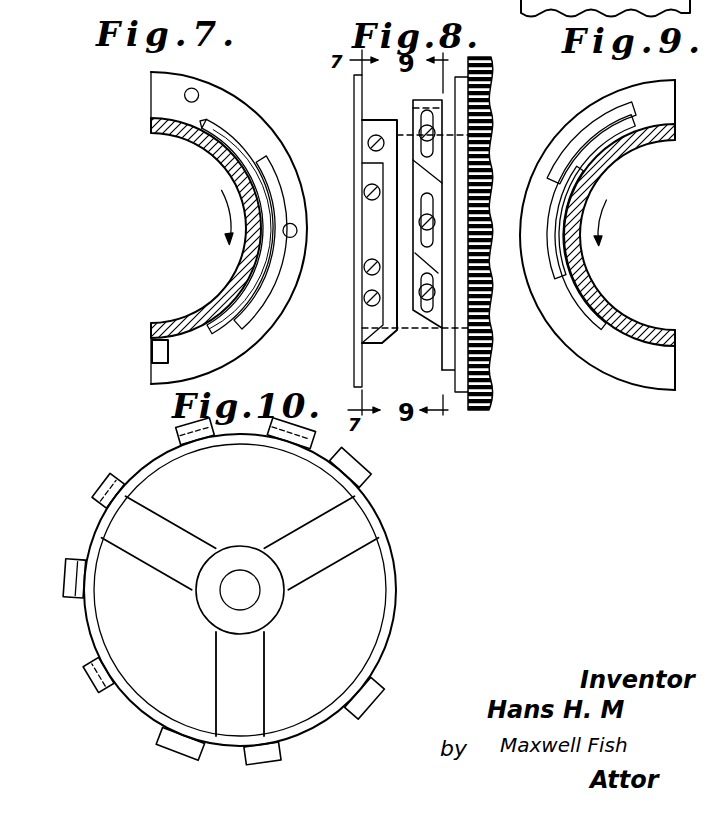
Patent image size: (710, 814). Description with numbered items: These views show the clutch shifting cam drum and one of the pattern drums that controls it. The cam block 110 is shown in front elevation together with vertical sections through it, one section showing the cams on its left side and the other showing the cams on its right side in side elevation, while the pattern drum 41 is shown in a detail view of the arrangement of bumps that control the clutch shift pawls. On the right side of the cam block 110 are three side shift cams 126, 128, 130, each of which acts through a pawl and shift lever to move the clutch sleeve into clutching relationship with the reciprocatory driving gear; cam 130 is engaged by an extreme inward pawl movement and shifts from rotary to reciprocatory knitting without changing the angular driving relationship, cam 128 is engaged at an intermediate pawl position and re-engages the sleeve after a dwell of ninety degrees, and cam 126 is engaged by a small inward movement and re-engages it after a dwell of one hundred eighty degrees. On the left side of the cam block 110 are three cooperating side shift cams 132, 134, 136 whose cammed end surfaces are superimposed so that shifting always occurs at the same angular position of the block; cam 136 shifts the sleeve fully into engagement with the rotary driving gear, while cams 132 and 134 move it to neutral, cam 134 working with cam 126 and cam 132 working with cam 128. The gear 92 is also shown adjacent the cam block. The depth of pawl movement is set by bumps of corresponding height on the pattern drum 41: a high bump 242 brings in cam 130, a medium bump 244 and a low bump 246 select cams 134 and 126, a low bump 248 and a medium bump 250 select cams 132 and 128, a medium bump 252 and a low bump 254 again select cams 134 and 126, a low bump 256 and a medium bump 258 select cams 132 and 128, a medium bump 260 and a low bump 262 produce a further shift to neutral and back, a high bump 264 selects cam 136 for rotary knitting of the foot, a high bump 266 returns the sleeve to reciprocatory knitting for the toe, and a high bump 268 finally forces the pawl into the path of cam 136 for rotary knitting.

In FIG. 10, the pattern drum 41 is at (397, 570).
In FIG. 8, the gear 92 is at (487, 412).
In FIG. 7, the cam block 110 is at (169, 137).
In FIG. 8, the cam block 110 is at (404, 118).
In FIG. 9, the cam block 110 is at (628, 324).
In FIG. 8, the side shift cam 126 is at (435, 152).
In FIG. 9, the side shift cam 126 is at (600, 120).
In FIG. 8, the side shift cam 128 is at (436, 255).
In FIG. 9, the side shift cam 128 is at (553, 205).
In FIG. 8, the side shift cam 130 is at (432, 313).
In FIG. 9, the side shift cam 130 is at (580, 306).
In FIG. 7, the side shift cam 132 is at (270, 290).
In FIG. 8, the side shift cam 132 is at (372, 316).
In FIG. 7, the side shift cam 134 is at (262, 173).
In FIG. 8, the side shift cam 134 is at (367, 213).
In FIG. 7, the side shift cam 136 is at (213, 130).
In FIG. 8, the side shift cam 136 is at (372, 153).
In FIG. 10, the high bump 242 is at (367, 472).
In FIG. 10, the medium bump 244 is at (302, 447).
In FIG. 10, the low bump 246 is at (270, 432).
In FIG. 10, the low bump 248 is at (197, 440).
In FIG. 10, the medium bump 250 is at (178, 427).
In FIG. 10, the medium bump 252 is at (108, 478).
In FIG. 10, the low bump 254 is at (108, 495).
In FIG. 10, the low bump 256 is at (78, 580).
In FIG. 10, the medium bump 258 is at (65, 578).
In FIG. 10, the medium bump 260 is at (87, 679).
In FIG. 10, the low bump 262 is at (102, 671).
In FIG. 10, the high bump 264 is at (153, 741).
In FIG. 10, the high bump 266 is at (268, 760).
In FIG. 10, the high bump 268 is at (377, 695).